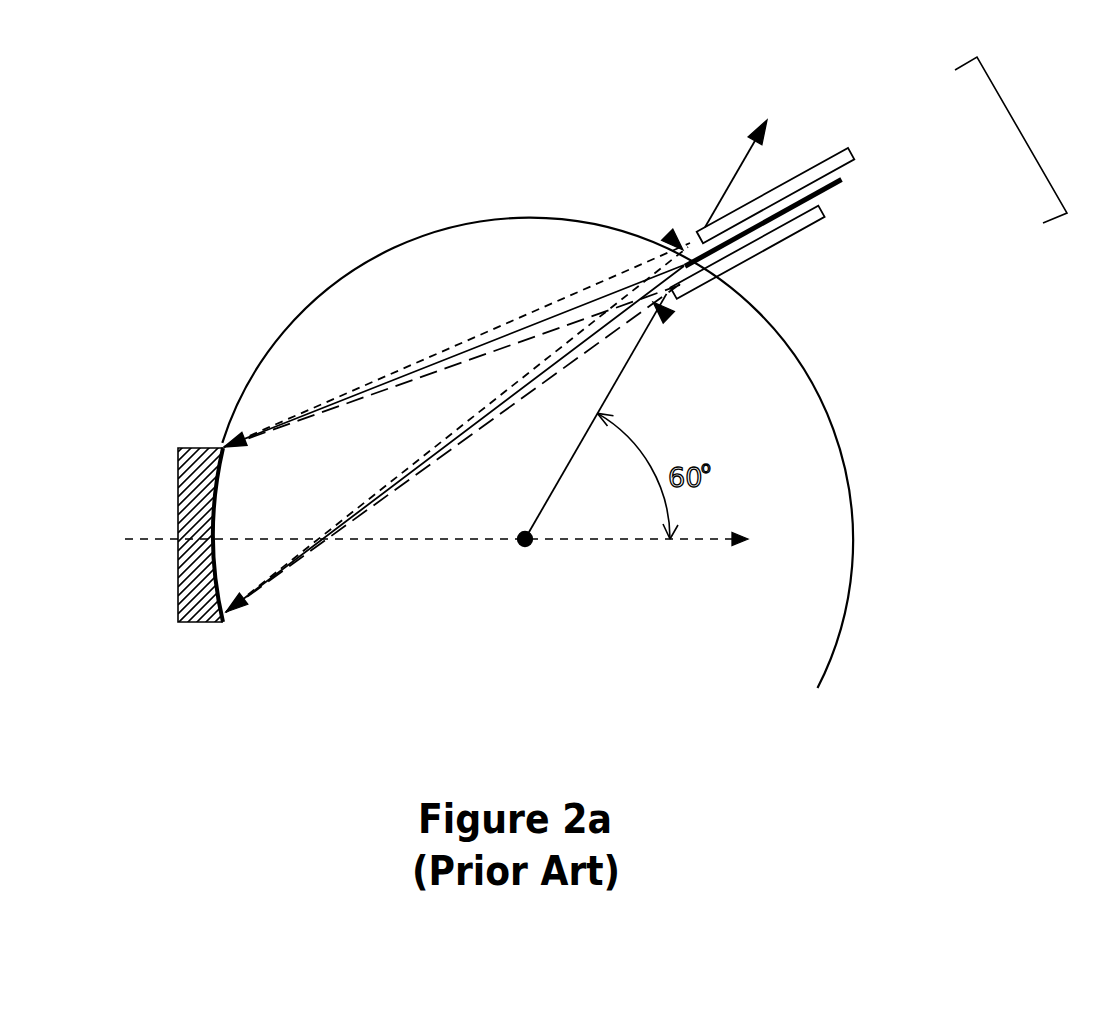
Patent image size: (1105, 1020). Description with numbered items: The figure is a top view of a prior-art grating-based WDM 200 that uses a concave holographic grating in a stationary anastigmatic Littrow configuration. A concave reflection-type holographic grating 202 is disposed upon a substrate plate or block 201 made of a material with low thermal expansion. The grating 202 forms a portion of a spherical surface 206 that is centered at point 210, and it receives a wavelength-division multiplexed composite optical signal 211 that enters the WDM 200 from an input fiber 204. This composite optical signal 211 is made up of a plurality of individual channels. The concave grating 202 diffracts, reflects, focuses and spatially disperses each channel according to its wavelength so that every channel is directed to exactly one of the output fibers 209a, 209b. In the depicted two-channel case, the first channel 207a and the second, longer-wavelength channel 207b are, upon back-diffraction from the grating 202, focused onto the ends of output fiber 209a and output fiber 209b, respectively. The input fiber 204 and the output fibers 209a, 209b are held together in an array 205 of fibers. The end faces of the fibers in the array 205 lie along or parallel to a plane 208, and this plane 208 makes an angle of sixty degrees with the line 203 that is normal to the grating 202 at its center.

The WDM 200 is at (316, 124).
The substrate plate or block 201 is at (178, 625).
The concave reflection-type holographic grating 202 is at (217, 585).
The line normal to the grating 203 is at (712, 543).
The input fiber 204 is at (842, 180).
The array of fibers 205 is at (1022, 140).
The spherical surface 206 is at (841, 640).
The channel λ1 207a is at (668, 236).
The channel λ2 207b is at (668, 317).
The plane 208 is at (757, 142).
The output fiber 209a is at (855, 148).
The output fiber 209b is at (826, 210).
The center point of spherical surface 210 is at (530, 547).
The composite optical signal 211 is at (236, 436).